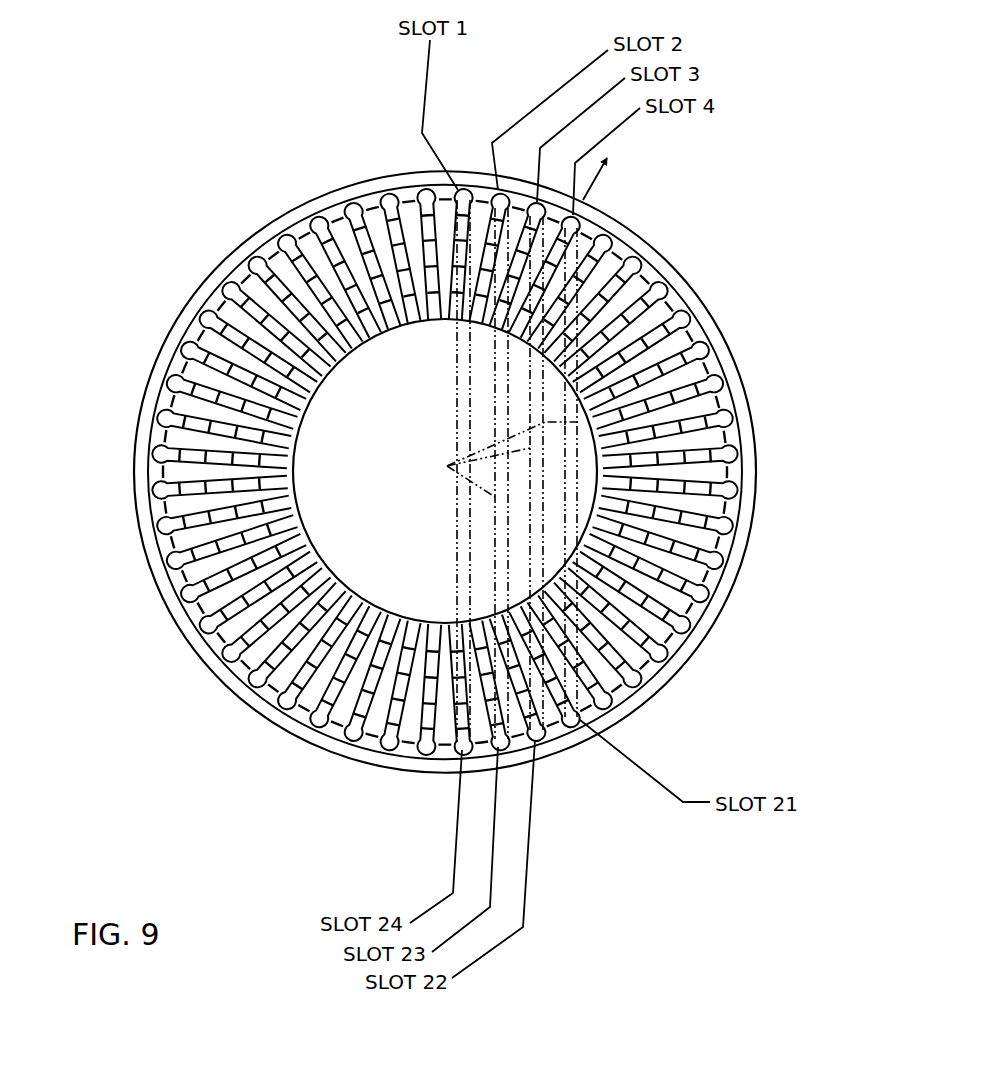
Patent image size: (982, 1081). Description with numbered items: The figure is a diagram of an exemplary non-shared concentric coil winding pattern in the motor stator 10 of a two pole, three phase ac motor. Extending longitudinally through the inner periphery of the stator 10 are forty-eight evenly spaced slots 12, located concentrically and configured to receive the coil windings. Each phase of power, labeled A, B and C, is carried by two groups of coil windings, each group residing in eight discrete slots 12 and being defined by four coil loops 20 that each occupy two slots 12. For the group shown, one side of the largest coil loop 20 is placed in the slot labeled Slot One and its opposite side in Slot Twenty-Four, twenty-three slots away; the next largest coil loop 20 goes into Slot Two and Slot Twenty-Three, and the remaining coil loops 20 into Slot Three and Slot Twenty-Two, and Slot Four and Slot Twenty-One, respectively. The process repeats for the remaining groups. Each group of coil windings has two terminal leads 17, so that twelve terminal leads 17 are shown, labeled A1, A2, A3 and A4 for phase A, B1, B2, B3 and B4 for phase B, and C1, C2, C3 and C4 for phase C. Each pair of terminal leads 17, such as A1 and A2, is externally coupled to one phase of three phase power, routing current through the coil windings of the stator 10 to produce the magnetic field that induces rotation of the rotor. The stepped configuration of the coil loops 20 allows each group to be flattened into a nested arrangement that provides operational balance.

The stator 10 is at (253, 181).
The slots 12 is at (173, 556).
The terminal leads 17 is at (490, 123).
The coil loops 20 is at (445, 465).
The terminal lead of phase A A1 is at (466, 193).
The terminal lead of phase A A2 is at (572, 733).
The terminal lead of phase A A3 is at (420, 755).
The terminal lead of phase A A4 is at (326, 215).
The terminal lead of phase B B1 is at (610, 370).
The terminal lead of phase B B2 is at (320, 660).
The terminal lead of phase B B3 is at (305, 553).
The terminal lead of phase B B4 is at (610, 242).
The terminal lead of phase C C1 is at (605, 558).
The terminal lead of phase C C2 is at (270, 462).
The terminal lead of phase C C3 is at (305, 358).
The terminal lead of phase C C4 is at (600, 478).